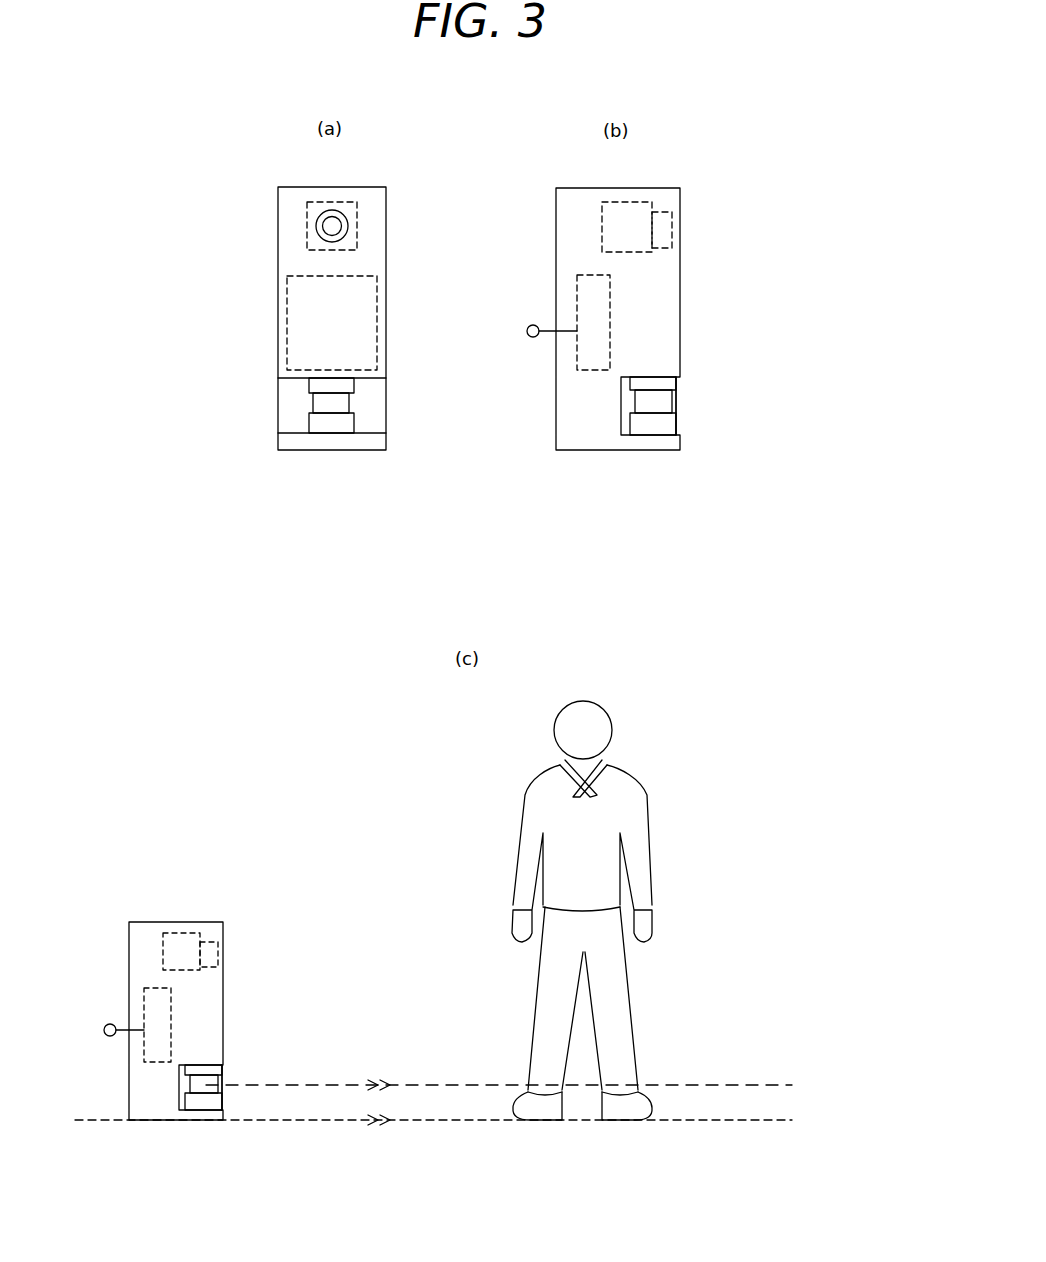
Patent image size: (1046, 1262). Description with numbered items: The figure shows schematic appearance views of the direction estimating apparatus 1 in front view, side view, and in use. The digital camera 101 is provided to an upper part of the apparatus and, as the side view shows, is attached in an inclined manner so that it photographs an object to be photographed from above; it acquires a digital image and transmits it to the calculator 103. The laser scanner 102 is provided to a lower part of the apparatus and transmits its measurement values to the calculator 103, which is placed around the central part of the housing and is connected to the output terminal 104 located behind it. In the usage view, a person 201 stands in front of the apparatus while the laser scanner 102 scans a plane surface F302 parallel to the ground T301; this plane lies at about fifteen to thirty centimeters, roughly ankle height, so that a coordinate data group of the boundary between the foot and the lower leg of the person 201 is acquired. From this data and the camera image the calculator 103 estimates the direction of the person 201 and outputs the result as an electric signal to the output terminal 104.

The direction estimating apparatus 1 is at (386, 205).
The digital camera 101 is at (673, 218).
The laser scanner 102 is at (664, 425).
The calculator 103 is at (577, 285).
The output terminal 104 is at (527, 331).
The person 201 is at (530, 803).
The plane surface F302 is at (733, 1084).
The ground T301 is at (735, 1122).